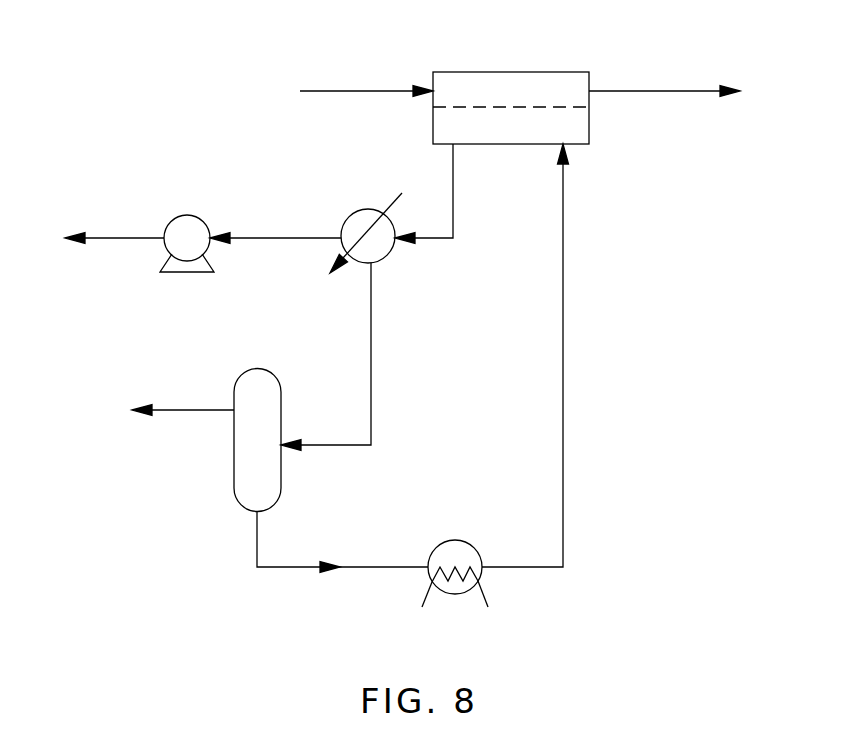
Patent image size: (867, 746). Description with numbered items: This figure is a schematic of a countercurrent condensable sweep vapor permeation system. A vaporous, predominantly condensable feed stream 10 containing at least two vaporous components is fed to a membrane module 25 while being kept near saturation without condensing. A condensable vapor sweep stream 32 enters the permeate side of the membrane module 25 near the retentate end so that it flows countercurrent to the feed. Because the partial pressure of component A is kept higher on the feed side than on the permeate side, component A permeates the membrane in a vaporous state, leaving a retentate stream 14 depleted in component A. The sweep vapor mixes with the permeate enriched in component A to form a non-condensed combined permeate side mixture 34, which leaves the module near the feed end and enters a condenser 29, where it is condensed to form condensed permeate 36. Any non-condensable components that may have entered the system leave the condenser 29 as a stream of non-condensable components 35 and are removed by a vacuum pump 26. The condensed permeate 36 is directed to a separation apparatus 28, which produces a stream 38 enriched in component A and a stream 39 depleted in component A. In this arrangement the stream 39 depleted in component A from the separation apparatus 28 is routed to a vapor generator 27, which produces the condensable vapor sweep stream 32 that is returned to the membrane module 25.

The feed stream 10 is at (366, 75).
The retentate stream 14 is at (664, 74).
The membrane module 25 is at (487, 72).
The vacuum pump 26 is at (187, 215).
The vapor generator 27 is at (453, 538).
The separation apparatus 28 is at (230, 468).
The condenser 29 is at (355, 211).
The condensable vapor sweep stream 32 is at (543, 355).
The combined permeate side mixture 34 is at (424, 194).
The stream of non-condensable components 35 is at (275, 221).
The condensed permeate 36 is at (326, 357).
The stream enriched in component A 38 is at (130, 395).
The stream depleted in component A 39 is at (342, 557).